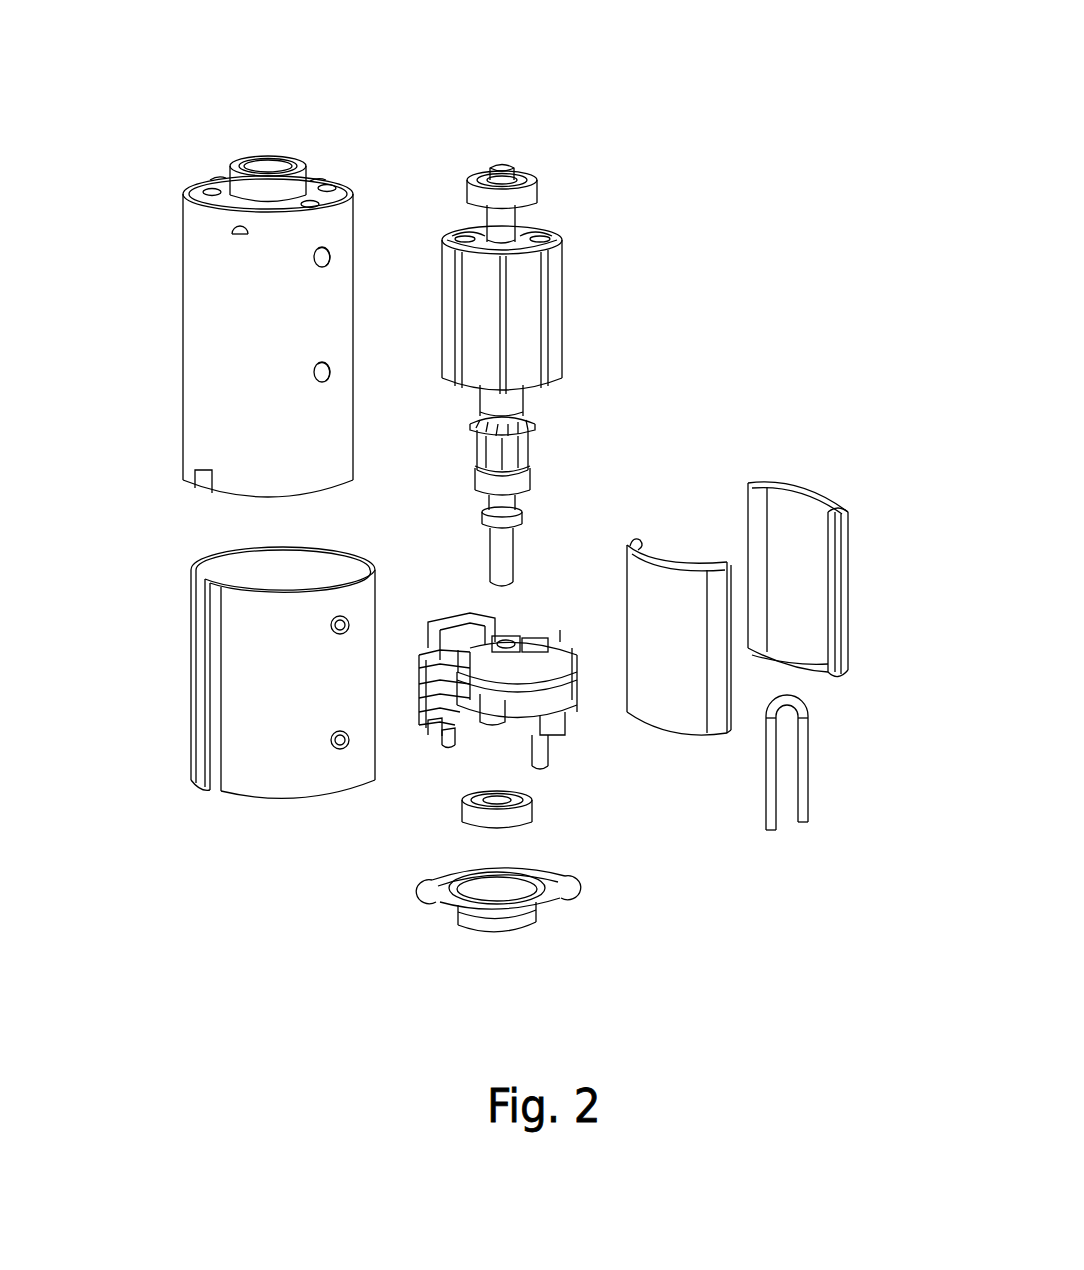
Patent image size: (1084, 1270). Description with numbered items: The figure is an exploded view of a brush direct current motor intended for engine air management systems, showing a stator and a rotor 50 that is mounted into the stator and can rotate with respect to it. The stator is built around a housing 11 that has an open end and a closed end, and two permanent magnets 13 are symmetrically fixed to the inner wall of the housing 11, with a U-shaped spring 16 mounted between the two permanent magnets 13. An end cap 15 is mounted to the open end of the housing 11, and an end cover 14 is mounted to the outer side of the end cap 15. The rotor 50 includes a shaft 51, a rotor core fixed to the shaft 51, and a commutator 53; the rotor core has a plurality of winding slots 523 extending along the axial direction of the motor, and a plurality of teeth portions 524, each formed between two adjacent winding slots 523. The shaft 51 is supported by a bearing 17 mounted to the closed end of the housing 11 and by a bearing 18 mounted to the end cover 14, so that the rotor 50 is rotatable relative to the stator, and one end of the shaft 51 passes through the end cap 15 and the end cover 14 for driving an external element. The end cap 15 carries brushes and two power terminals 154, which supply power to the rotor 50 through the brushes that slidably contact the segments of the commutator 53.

The housing 11 is at (195, 252).
The permanent magnet 13 is at (784, 508).
The end cover 14 is at (520, 917).
The end cap 15 is at (572, 707).
The power terminal 154 is at (542, 755).
The U-shaped spring 16 is at (805, 793).
The bearing 17 is at (532, 192).
The bearing 18 is at (523, 818).
The rotor 50 is at (523, 274).
The shaft 51 is at (505, 543).
The commutator 53 is at (512, 447).
The winding slot 523 is at (458, 233).
The teeth portion 524 is at (523, 337).